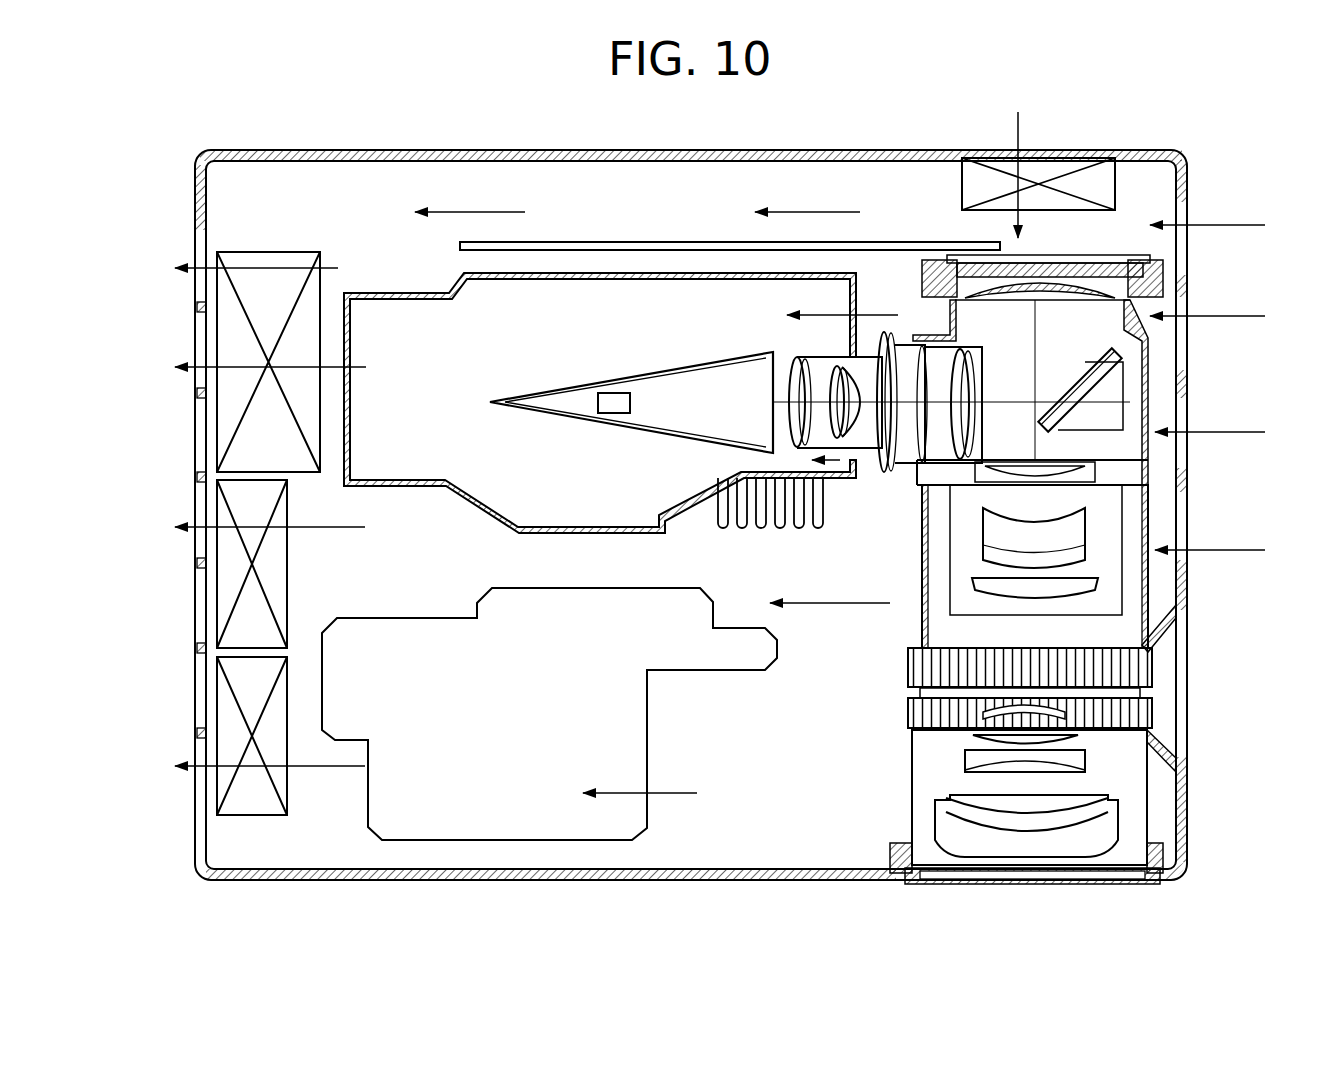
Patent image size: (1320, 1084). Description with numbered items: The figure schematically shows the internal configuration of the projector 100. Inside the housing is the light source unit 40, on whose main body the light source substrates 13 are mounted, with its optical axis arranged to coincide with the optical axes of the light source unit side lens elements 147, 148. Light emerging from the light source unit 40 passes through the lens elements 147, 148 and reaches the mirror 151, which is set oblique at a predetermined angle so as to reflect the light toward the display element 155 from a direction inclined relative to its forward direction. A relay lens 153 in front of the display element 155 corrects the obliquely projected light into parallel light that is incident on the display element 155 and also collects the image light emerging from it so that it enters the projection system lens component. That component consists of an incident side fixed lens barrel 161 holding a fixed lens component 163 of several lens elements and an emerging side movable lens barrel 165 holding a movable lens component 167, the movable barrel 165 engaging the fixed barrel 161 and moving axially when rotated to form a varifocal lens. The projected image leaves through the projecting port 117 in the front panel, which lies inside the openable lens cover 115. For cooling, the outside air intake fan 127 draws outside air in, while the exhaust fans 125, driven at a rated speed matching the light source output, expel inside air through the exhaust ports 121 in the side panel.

The projector 100 is at (1194, 173).
The exhaust ports 121 is at (196, 293).
The exhaust fans 125 is at (233, 413).
The outside air intake fan 127 is at (985, 182).
The light source unit 40 is at (635, 437).
The light source substrates 13 is at (616, 395).
The light source unit side lens element 147 is at (857, 415).
The light source unit side lens element 148 is at (968, 385).
The mirror 151 is at (1087, 380).
The relay lens 153 is at (1072, 400).
The display element 155 is at (1165, 272).
The incident side fixed lens barrel 161 is at (973, 535).
The fixed lens component 163 is at (978, 553).
The emerging side movable lens barrel 165 is at (975, 740).
The movable lens component 167 is at (962, 762).
The projecting port 117 is at (1015, 888).
The lens cover 115 is at (1130, 888).